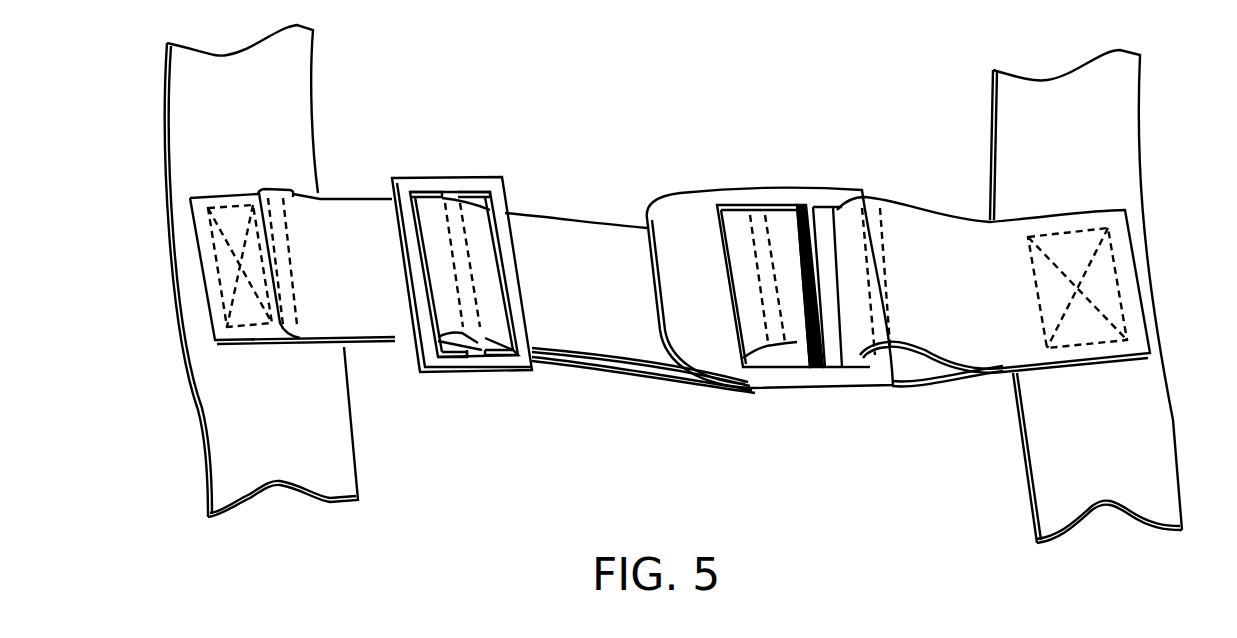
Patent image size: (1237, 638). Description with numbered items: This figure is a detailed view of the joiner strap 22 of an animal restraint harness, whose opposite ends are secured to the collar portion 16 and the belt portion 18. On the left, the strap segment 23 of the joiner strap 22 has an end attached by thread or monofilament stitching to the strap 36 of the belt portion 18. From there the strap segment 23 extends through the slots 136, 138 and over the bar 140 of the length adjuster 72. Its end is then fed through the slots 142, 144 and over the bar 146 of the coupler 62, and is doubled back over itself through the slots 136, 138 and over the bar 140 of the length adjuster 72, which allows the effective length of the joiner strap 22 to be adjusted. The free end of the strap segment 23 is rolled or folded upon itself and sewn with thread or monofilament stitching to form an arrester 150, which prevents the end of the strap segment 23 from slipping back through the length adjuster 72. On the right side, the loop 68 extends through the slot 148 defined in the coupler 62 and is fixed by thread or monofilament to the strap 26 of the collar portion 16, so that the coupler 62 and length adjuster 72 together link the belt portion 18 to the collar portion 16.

The collar portion 16 is at (1175, 127).
The belt portion 18 is at (158, 380).
The joiner strap 22 is at (543, 152).
The strap segment 23 is at (338, 218).
The strap 26 is at (1138, 406).
The strap 36 is at (190, 137).
The coupler 62 is at (790, 277).
The loop 68 is at (970, 258).
The length adjuster 72 is at (482, 279).
The slot 136 is at (450, 356).
The slot 138 is at (492, 357).
The bar 140 is at (478, 357).
The slot 142 is at (762, 368).
The slot 144 is at (805, 367).
The bar 146 is at (783, 362).
The slot 148 is at (845, 370).
The arrester 150 is at (272, 242).